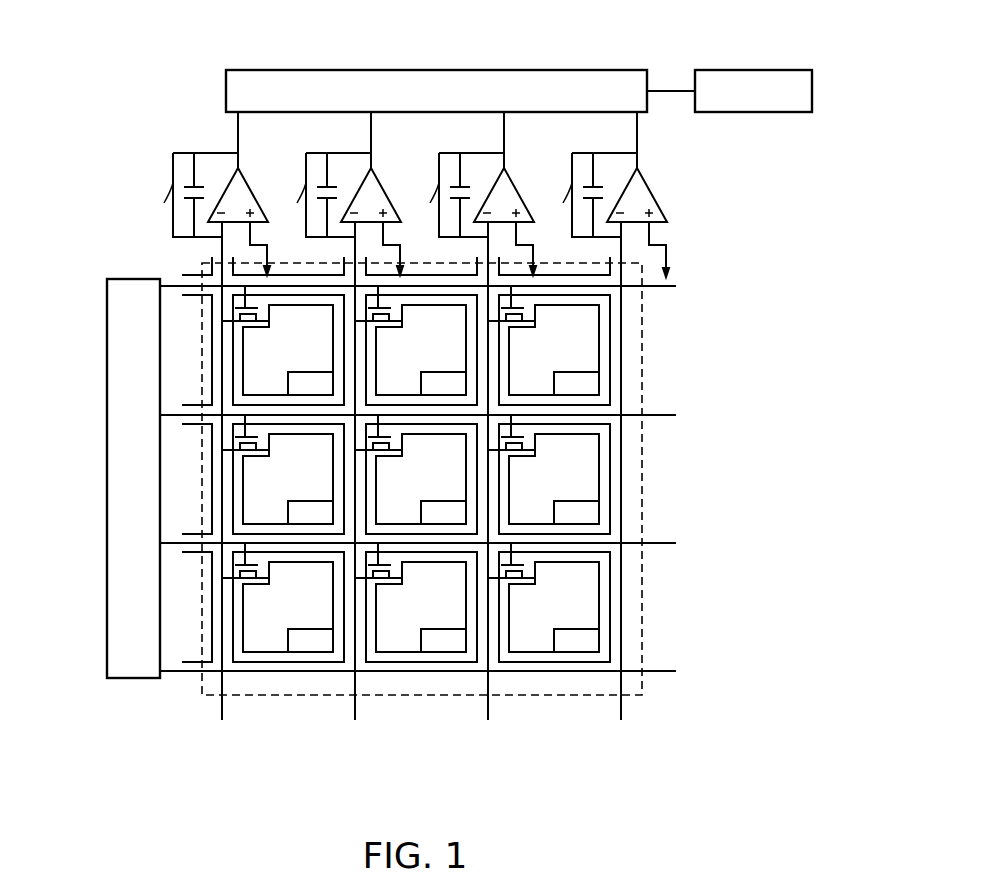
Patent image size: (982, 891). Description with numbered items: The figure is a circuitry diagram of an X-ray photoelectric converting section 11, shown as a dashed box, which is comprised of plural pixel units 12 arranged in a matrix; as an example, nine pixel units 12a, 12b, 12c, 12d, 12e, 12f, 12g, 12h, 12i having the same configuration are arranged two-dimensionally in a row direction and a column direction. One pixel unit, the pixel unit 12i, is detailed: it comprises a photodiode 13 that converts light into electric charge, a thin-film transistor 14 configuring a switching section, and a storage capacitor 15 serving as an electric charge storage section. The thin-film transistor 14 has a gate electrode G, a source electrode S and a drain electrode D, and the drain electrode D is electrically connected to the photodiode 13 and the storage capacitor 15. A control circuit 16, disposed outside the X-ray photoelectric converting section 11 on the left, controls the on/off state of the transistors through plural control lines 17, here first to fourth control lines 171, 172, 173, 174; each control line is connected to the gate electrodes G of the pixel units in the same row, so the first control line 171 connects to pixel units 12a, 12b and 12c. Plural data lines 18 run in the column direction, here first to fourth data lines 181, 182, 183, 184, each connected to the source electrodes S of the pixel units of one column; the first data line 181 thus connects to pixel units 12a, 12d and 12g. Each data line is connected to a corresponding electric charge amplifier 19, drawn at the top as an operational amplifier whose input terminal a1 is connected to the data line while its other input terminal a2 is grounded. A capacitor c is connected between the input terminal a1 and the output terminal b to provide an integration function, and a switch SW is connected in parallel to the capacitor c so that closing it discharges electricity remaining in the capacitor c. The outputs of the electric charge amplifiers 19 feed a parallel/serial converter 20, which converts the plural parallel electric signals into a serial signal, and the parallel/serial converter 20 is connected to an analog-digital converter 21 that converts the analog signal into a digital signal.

The X-ray photoelectric converting section 11 is at (202, 697).
The pixel unit 12 is at (439, 493).
The pixel unit 12a is at (283, 345).
The pixel unit 12b is at (416, 345).
The pixel unit 12c is at (549, 345).
The pixel unit 12d is at (283, 474).
The pixel unit 12e is at (416, 474).
The pixel unit 12f is at (549, 474).
The pixel unit 12g is at (283, 602).
The pixel unit 12h is at (416, 602).
The pixel unit 12i is at (592, 610).
The photodiode 13 is at (592, 611).
The thin-film transistor 14 is at (518, 558).
The storage capacitor 15 is at (575, 640).
The control circuit 16 is at (124, 680).
The control line 17 is at (361, 448).
The first control line 171 is at (174, 286).
The second control line 172 is at (175, 416).
The third control line 173 is at (175, 544).
The fourth control line 174 is at (176, 671).
The data line 18 is at (460, 493).
The first data line 181 is at (225, 703).
The second data line 182 is at (355, 703).
The third data line 183 is at (489, 703).
The fourth data line 184 is at (621, 703).
The electric charge amplifier 19 is at (243, 176).
The parallel/serial converter 20 is at (436, 68).
The analog-digital converter 21 is at (757, 68).
The switch SW is at (160, 193).
The input terminal a1 is at (224, 210).
The other input terminal a2 is at (258, 205).
The output terminal b is at (237, 166).
The capacitor c is at (190, 185).
The gate electrode G is at (508, 563).
The source electrode S is at (505, 578).
The drain electrode D is at (530, 585).